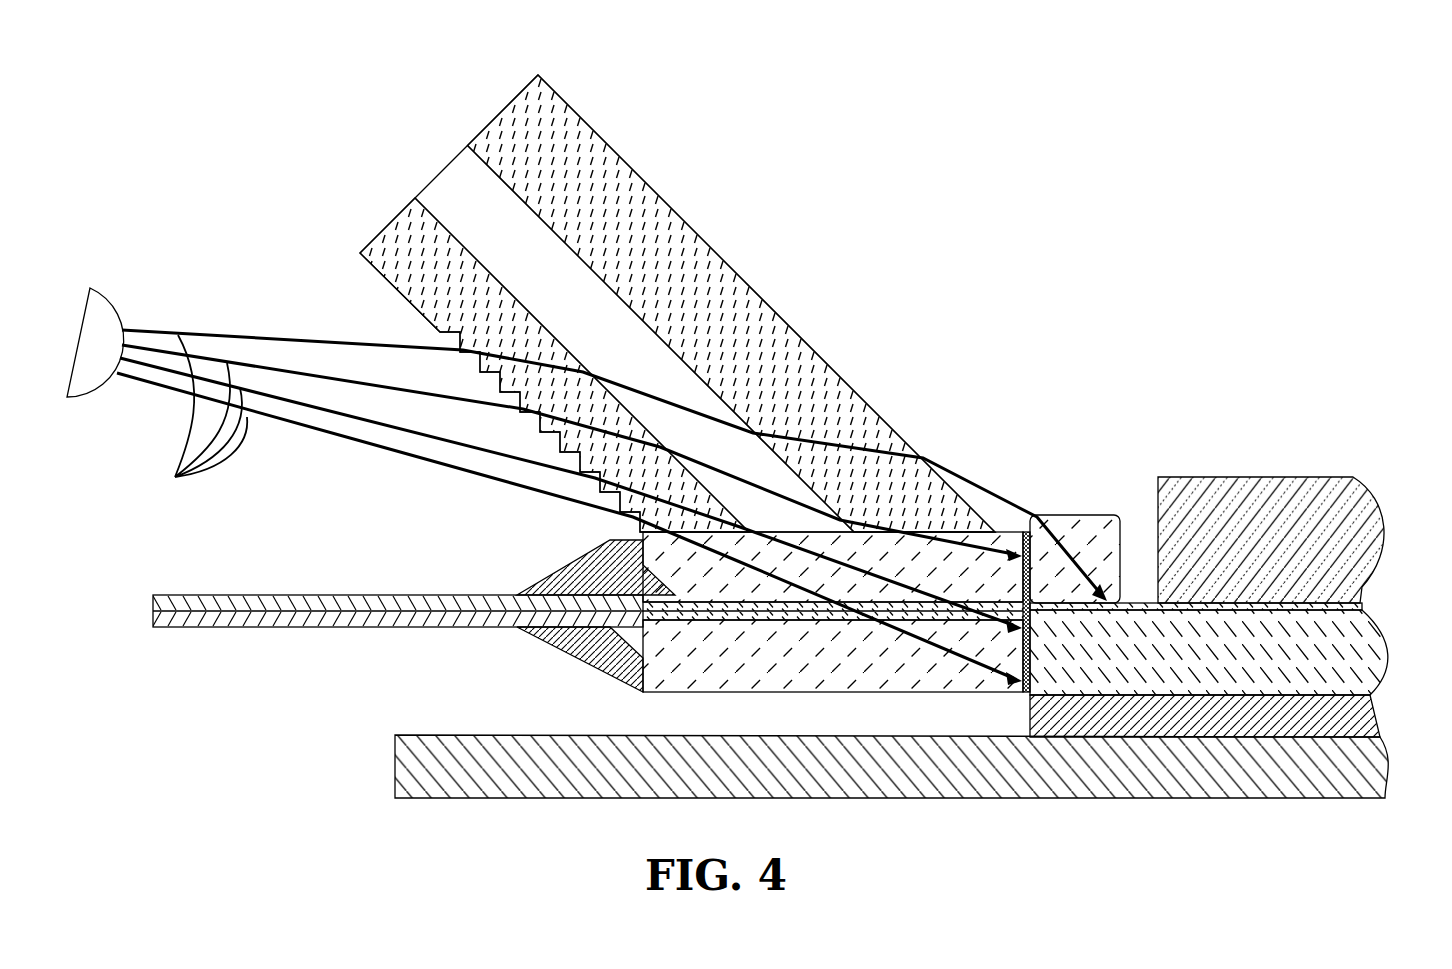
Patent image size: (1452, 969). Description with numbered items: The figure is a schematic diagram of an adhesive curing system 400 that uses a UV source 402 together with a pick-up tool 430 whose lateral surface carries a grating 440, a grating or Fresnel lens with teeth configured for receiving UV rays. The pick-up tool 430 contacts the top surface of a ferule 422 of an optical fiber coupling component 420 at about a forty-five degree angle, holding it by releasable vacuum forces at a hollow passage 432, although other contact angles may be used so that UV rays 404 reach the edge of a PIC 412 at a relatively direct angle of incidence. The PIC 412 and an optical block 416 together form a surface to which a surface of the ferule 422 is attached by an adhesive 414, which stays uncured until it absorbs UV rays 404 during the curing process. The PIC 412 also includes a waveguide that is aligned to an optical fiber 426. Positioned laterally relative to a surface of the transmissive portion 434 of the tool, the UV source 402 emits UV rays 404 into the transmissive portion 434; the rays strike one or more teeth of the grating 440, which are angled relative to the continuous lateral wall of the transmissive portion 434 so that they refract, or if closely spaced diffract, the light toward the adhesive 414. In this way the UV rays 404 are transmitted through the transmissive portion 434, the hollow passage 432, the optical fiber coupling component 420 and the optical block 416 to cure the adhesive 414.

The adhesive curing system 400 is at (168, 114).
The UV source 402 is at (90, 286).
The UV rays 404 is at (187, 419).
The PIC 412 is at (1387, 637).
The adhesive 414 is at (1028, 692).
The optical block 416 is at (1053, 515).
The optical fiber coupling component 420 is at (493, 584).
The ferule 422 is at (643, 541).
The optical fiber 426 is at (340, 630).
The pick-up tool 430 is at (762, 270).
The hollow passage 432 is at (447, 163).
The transmissive portion 434 is at (387, 232).
The grating 440 is at (483, 367).